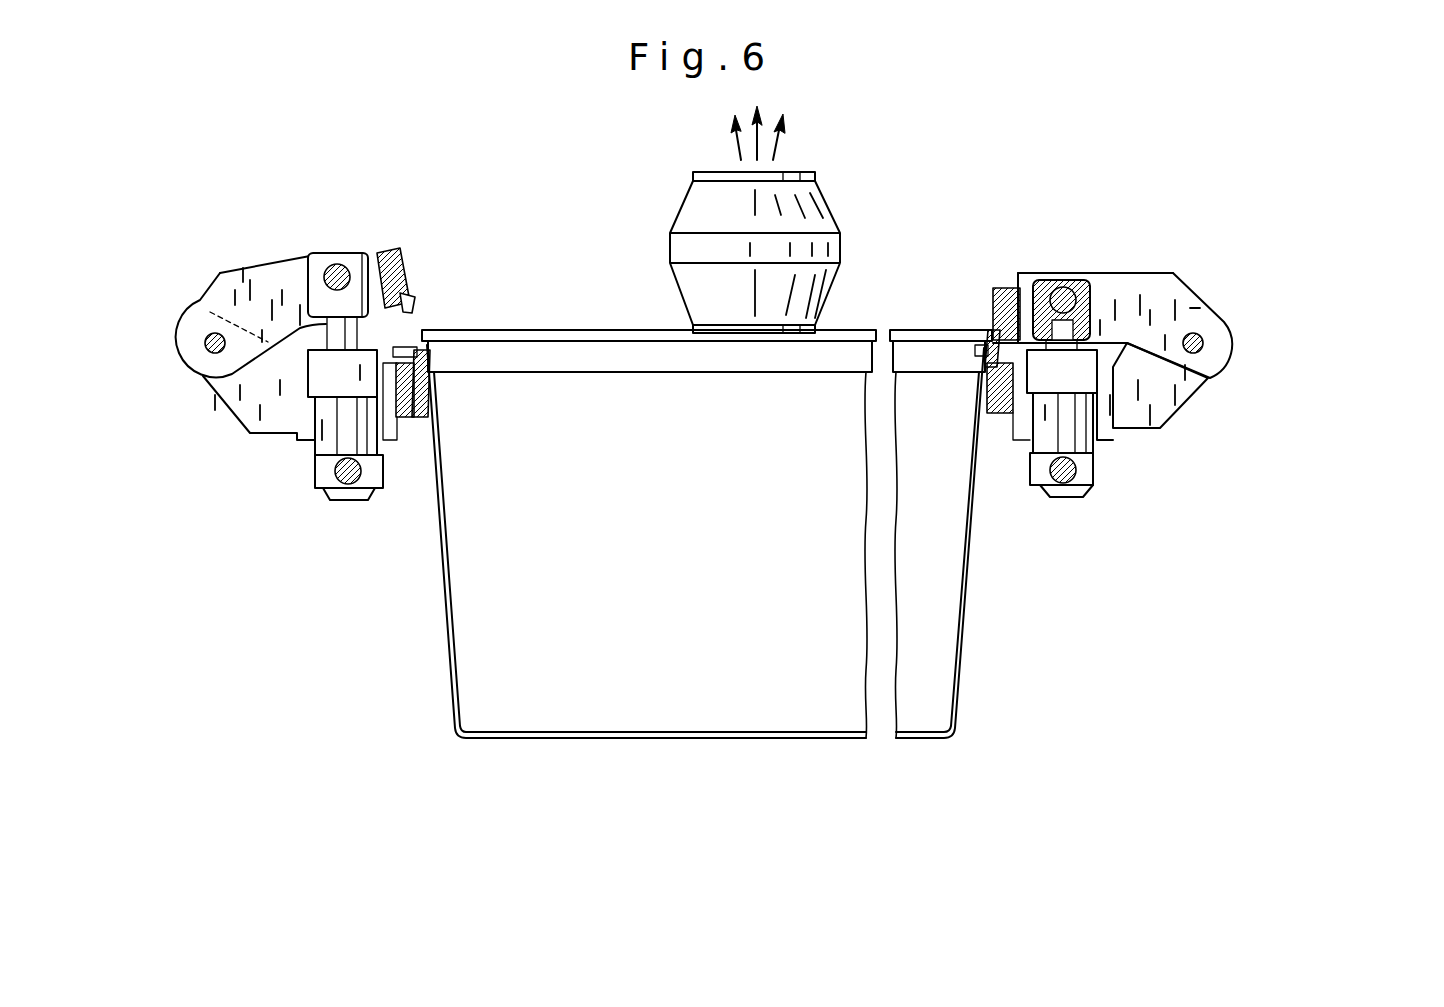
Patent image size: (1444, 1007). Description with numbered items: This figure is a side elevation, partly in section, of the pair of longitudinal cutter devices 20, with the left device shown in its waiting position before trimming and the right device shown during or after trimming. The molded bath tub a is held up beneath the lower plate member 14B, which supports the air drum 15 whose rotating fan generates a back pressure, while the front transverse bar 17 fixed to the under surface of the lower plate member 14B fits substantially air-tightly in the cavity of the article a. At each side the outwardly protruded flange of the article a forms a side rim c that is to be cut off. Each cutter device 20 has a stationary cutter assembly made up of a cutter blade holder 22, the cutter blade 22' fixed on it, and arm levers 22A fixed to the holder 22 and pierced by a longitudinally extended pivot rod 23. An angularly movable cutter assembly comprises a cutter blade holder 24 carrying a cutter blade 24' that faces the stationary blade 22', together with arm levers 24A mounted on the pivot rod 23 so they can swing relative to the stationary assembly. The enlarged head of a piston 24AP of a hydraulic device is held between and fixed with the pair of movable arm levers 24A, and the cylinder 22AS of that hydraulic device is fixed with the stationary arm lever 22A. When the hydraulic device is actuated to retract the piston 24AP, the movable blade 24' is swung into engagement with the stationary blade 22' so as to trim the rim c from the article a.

The air drum 15 is at (822, 208).
The lower plate member 14B is at (569, 332).
The front transverse bar 17 is at (637, 372).
The molded bath tub a is at (443, 589).
The longitudinal cutter device 20 is at (235, 268).
The movable arm lever 24A is at (260, 280).
The piston 24AP is at (321, 270).
The movable cutter blade holder 24 is at (698, 282).
The movable cutter blade 24' is at (696, 290).
The side rim c is at (405, 338).
The pivot rod 23 is at (210, 353).
The stationary arm lever 22A is at (250, 400).
The cylinder 22AS is at (330, 450).
The stationary cutter blade holder 22 is at (704, 430).
The stationary cutter blade 22' is at (706, 400).